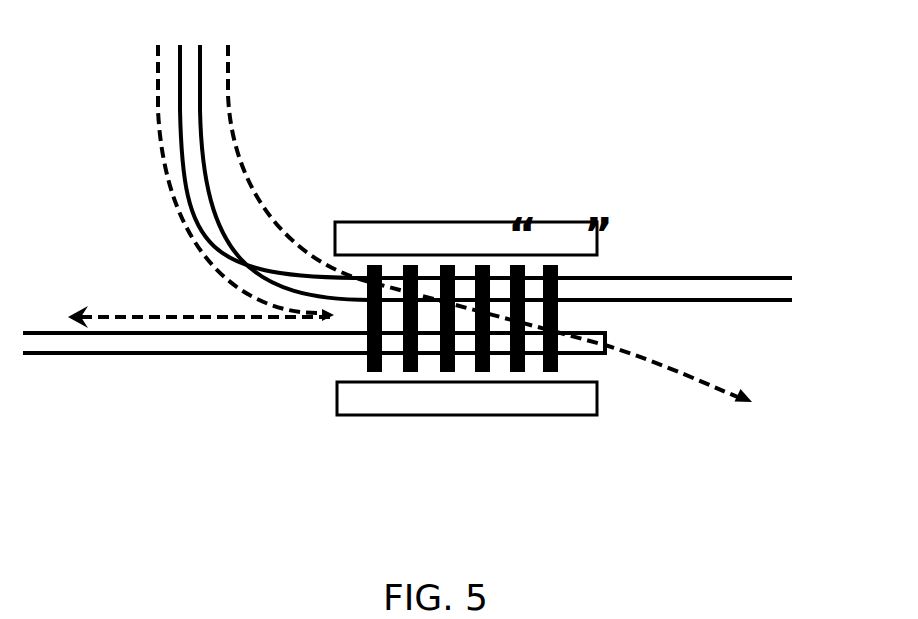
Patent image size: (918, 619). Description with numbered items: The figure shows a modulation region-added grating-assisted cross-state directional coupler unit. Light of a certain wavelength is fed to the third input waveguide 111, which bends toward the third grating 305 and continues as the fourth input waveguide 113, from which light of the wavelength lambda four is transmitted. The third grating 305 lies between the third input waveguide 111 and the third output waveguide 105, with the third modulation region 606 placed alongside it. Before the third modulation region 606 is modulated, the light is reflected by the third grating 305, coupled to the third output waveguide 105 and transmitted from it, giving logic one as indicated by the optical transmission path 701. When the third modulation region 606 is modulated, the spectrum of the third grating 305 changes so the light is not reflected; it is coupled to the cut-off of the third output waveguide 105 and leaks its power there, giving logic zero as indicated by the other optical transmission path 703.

The third input waveguide 111 is at (186, 137).
The fourth input waveguide 113 is at (682, 290).
The third output waveguide 105 is at (140, 343).
The third grating 305 is at (444, 268).
The third modulation region 606 is at (403, 394).
The optical transmission path 701 is at (125, 313).
The optical transmission path 703 is at (688, 371).